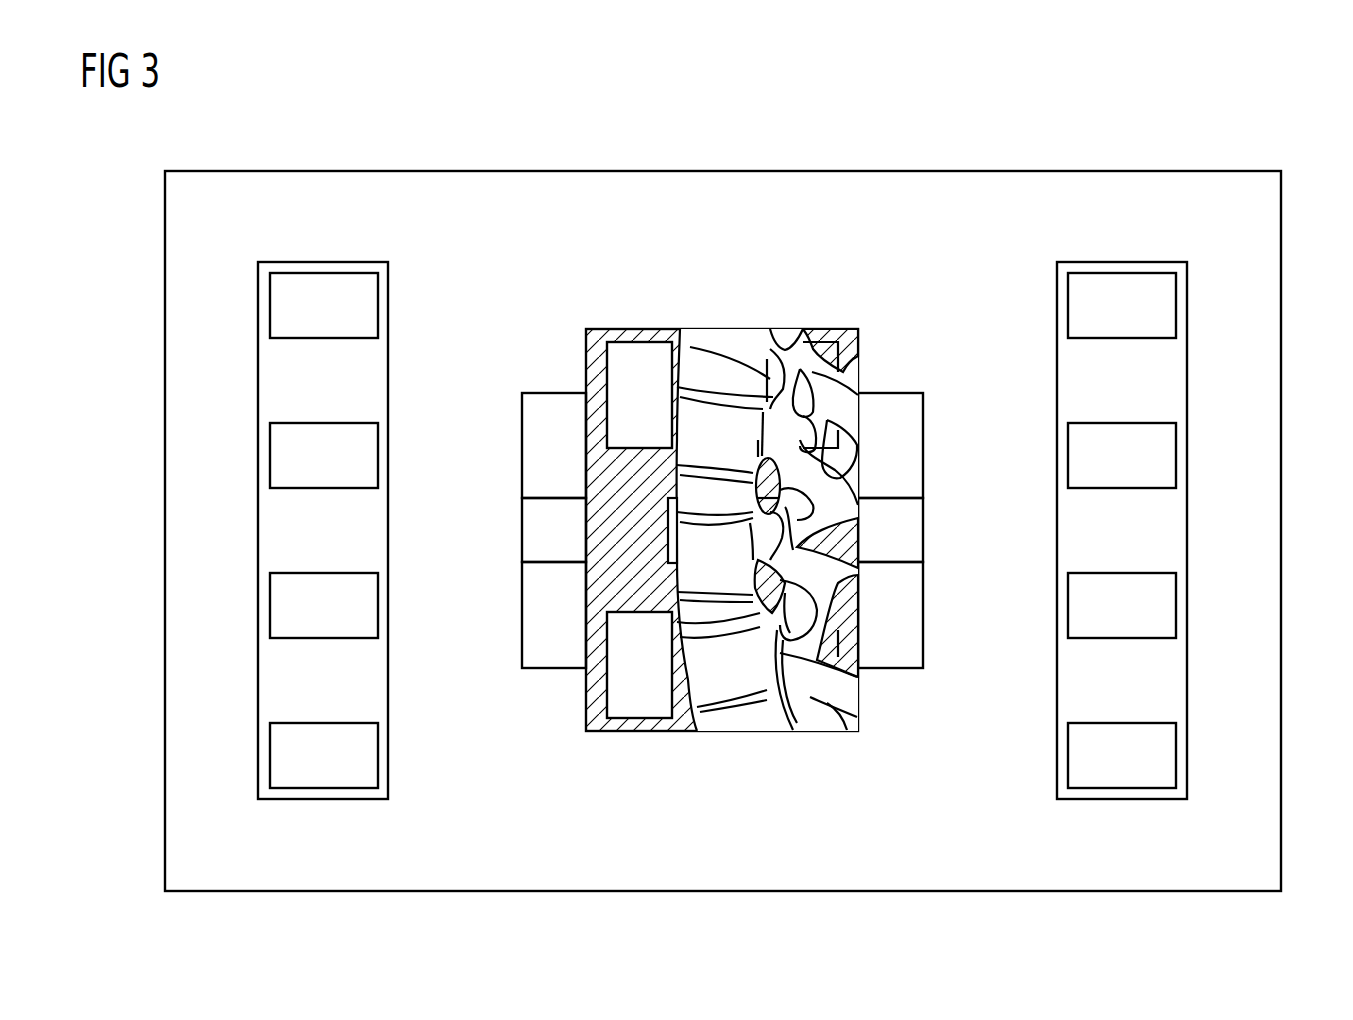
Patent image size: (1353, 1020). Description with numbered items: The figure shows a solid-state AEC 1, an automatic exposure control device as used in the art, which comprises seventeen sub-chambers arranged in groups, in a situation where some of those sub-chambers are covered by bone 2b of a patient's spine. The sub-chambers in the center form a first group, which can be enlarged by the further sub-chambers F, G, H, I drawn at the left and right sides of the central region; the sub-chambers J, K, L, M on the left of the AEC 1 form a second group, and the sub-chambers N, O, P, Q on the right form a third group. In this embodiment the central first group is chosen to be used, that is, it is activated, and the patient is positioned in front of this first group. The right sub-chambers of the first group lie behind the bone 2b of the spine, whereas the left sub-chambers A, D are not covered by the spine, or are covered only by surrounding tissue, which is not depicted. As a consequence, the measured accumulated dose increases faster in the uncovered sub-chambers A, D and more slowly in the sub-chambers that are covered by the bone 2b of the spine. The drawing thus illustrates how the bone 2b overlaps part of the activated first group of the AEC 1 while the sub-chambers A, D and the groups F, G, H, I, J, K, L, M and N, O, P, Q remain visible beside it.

The solid-state AEC 1 is at (1282, 531).
The bone 2b is at (735, 329).
The sub-chamber A is at (639, 395).
The sub-chamber D is at (639, 665).
The sub-chamber F is at (554, 445).
The sub-chamber G is at (554, 615).
The sub-chamber H is at (890, 445).
The sub-chamber I is at (890, 615).
The sub-chamber J is at (324, 305).
The sub-chamber K is at (324, 455).
The sub-chamber L is at (324, 605).
The sub-chamber M is at (324, 755).
The sub-chamber N is at (1122, 305).
The sub-chamber O is at (1122, 455).
The sub-chamber P is at (1122, 605).
The sub-chamber Q is at (1122, 755).